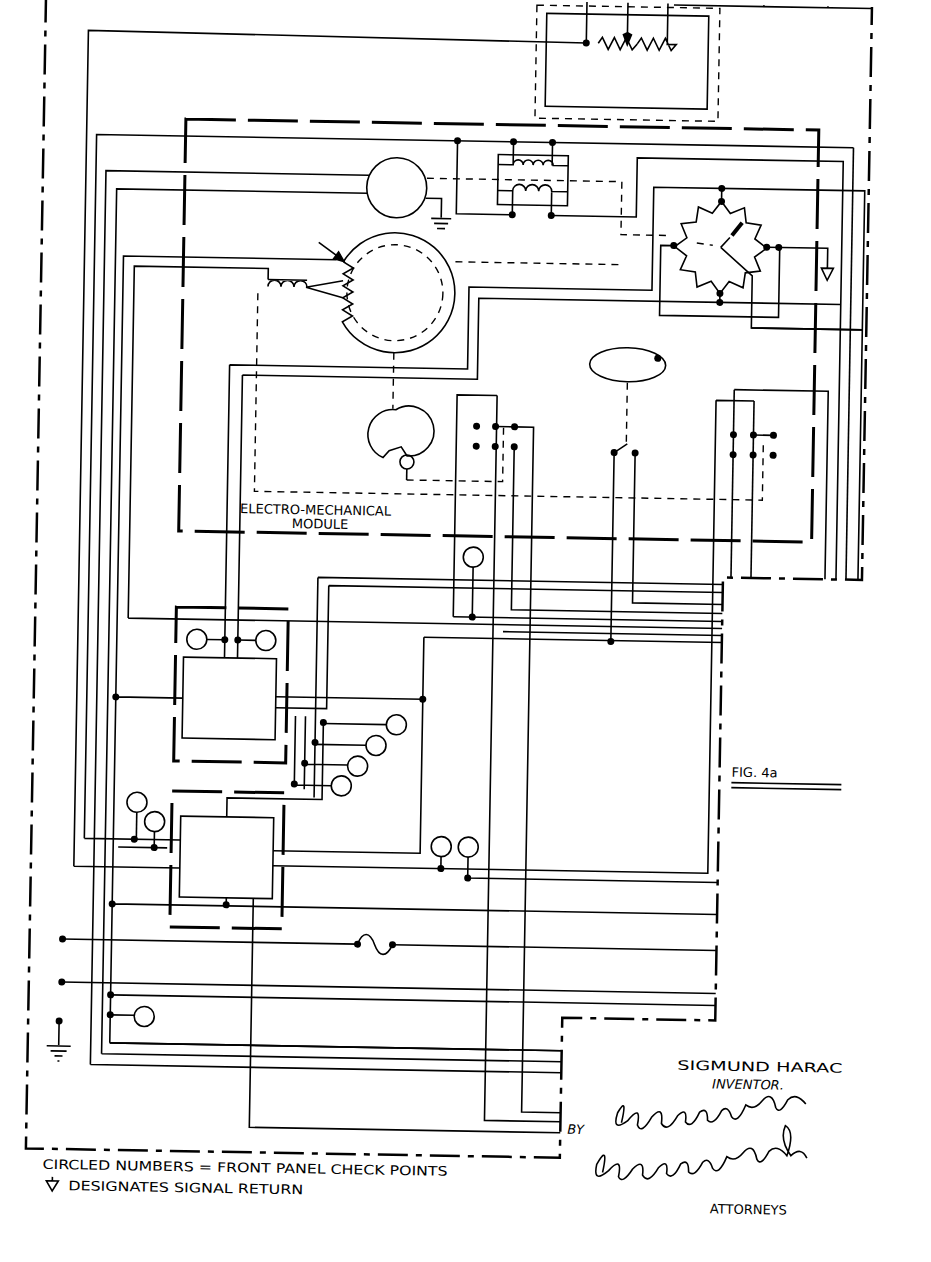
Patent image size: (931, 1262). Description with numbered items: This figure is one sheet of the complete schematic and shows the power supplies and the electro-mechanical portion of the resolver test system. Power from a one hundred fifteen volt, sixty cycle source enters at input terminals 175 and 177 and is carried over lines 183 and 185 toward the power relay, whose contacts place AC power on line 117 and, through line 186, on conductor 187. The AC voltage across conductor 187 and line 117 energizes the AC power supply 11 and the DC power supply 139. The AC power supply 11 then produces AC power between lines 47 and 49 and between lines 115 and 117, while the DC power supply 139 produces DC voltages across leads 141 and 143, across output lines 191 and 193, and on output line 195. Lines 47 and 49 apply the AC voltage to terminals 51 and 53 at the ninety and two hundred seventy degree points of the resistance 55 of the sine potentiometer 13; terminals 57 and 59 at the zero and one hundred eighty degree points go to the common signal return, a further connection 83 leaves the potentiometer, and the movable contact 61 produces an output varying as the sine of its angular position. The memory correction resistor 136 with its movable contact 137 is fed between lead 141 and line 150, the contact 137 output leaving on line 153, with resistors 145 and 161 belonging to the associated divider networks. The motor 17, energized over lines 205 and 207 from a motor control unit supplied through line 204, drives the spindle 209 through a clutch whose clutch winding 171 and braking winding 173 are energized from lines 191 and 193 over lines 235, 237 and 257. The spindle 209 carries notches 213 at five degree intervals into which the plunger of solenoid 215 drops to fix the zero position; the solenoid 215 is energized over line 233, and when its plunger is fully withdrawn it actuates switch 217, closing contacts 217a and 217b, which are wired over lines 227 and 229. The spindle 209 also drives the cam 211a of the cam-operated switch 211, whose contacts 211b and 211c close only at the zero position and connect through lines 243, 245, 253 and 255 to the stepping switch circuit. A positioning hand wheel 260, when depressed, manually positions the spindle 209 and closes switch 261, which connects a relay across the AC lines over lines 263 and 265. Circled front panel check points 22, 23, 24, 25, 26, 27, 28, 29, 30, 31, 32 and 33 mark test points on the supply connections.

The AC power supply 11 is at (204, 744).
The sine potentiometer 13 is at (708, 265).
The motor 17 is at (368, 170).
The front panel check point 22 is at (588, 586).
The buffer amplifier 23 is at (132, 1016).
The front panel check point 24 is at (364, 724).
The phase shifter 25 is at (350, 744).
The front panel check point 26 is at (335, 753).
The primary winding 27 is at (322, 756).
The front panel check point 28 is at (136, 815).
The transformer 29 is at (143, 831).
The front panel check point 30 is at (441, 852).
The secondary winding 31 is at (588, 861).
The front panel check point 32 is at (206, 639).
The scaler 33 is at (257, 640).
The line 47 is at (224, 571).
The line 49 is at (239, 571).
The terminal 51 is at (712, 199).
The terminal 53 is at (712, 290).
The resistance 55 is at (772, 240).
The terminal 57 is at (667, 250).
The terminal 59 is at (746, 275).
The contact 61 is at (720, 232).
The sine pot output line 83 is at (794, 323).
The line 115 is at (328, 650).
The line 117 is at (424, 770).
The resistor 136 is at (650, 27).
The movable contact 137 is at (610, 36).
The DC power supply 139 is at (208, 821).
The lead 141 is at (281, 36).
The lead 143 is at (257, 923).
The one hundred ohm resistor 145 is at (709, 89).
The line 150 is at (819, 4).
The line 153 is at (756, 4).
The nine kilohm resistor 161 is at (533, 214).
The clutch winding 171 is at (490, 166).
The braking winding 173 is at (490, 190).
The input terminal 175 is at (377, 943).
The input terminal 177 is at (66, 990).
The line 183 is at (642, 945).
The line 185 is at (607, 988).
The line 186 is at (456, 1002).
The conductor 187 is at (158, 268).
The output line 191 is at (254, 141).
The output line 193 is at (712, 478).
The output line 195 is at (690, 583).
The line 204 is at (193, 1048).
The line 205 is at (140, 176).
The line 207 is at (147, 195).
The spindle 209 is at (437, 258).
The cam-operated switch 211 is at (503, 435).
The cam 211a is at (367, 437).
The contact 211b is at (512, 425).
The contact 211c is at (515, 450).
The notches 213 is at (340, 322).
The solenoid 215 is at (264, 286).
The switch 217 is at (764, 443).
The contact 217a is at (778, 430).
The contact 217b is at (786, 462).
The line 227 is at (729, 525).
The line 229 is at (752, 520).
The line 233 is at (155, 262).
The line 235 is at (835, 133).
The line 237 is at (786, 380).
The line 243 is at (513, 578).
The line 245 is at (493, 514).
The line 253 is at (531, 516).
The line 255 is at (452, 608).
The line 257 is at (672, 155).
The positioning hand wheel 260 is at (660, 372).
The switch 261 is at (611, 445).
The line 263 is at (634, 563).
The line 265 is at (612, 561).